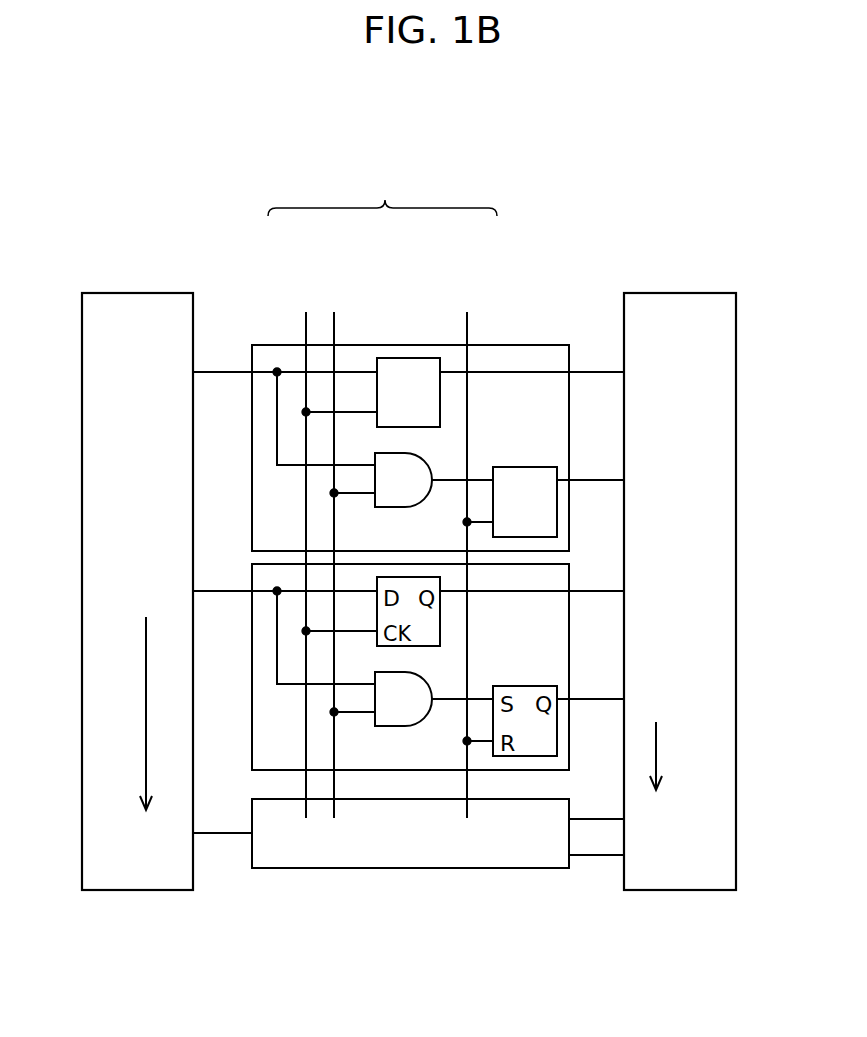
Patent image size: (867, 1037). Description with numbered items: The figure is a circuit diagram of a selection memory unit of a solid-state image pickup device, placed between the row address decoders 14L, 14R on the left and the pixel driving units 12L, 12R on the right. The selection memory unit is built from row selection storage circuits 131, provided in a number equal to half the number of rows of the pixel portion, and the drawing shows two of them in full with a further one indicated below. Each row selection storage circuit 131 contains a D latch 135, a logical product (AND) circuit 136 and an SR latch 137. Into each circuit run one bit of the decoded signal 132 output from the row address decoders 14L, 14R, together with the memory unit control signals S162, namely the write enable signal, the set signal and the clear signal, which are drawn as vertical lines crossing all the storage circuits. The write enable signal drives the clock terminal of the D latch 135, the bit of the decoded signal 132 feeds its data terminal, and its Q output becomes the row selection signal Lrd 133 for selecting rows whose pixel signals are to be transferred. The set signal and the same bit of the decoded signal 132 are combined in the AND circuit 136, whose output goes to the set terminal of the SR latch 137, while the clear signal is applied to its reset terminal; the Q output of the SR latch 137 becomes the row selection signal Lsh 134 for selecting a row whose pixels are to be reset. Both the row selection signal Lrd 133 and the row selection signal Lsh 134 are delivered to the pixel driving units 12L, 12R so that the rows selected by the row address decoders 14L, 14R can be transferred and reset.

The pixel driving unit 12L is at (680, 565).
The pixel driving unit 12R is at (663, 293).
The row address decoder 14L is at (140, 565).
The row address decoder 14R is at (133, 293).
The row selection storage circuit 131 is at (532, 345).
The decoded signal 132 is at (227, 370).
The row selection signal Lrd 133 is at (657, 347).
The row selection signal Lsh 134 is at (657, 450).
The D latch 135 is at (410, 358).
The logical product (AND) circuit 136 is at (403, 455).
The SR latch 137 is at (525, 467).
The memory unit control signals S162 is at (382, 497).